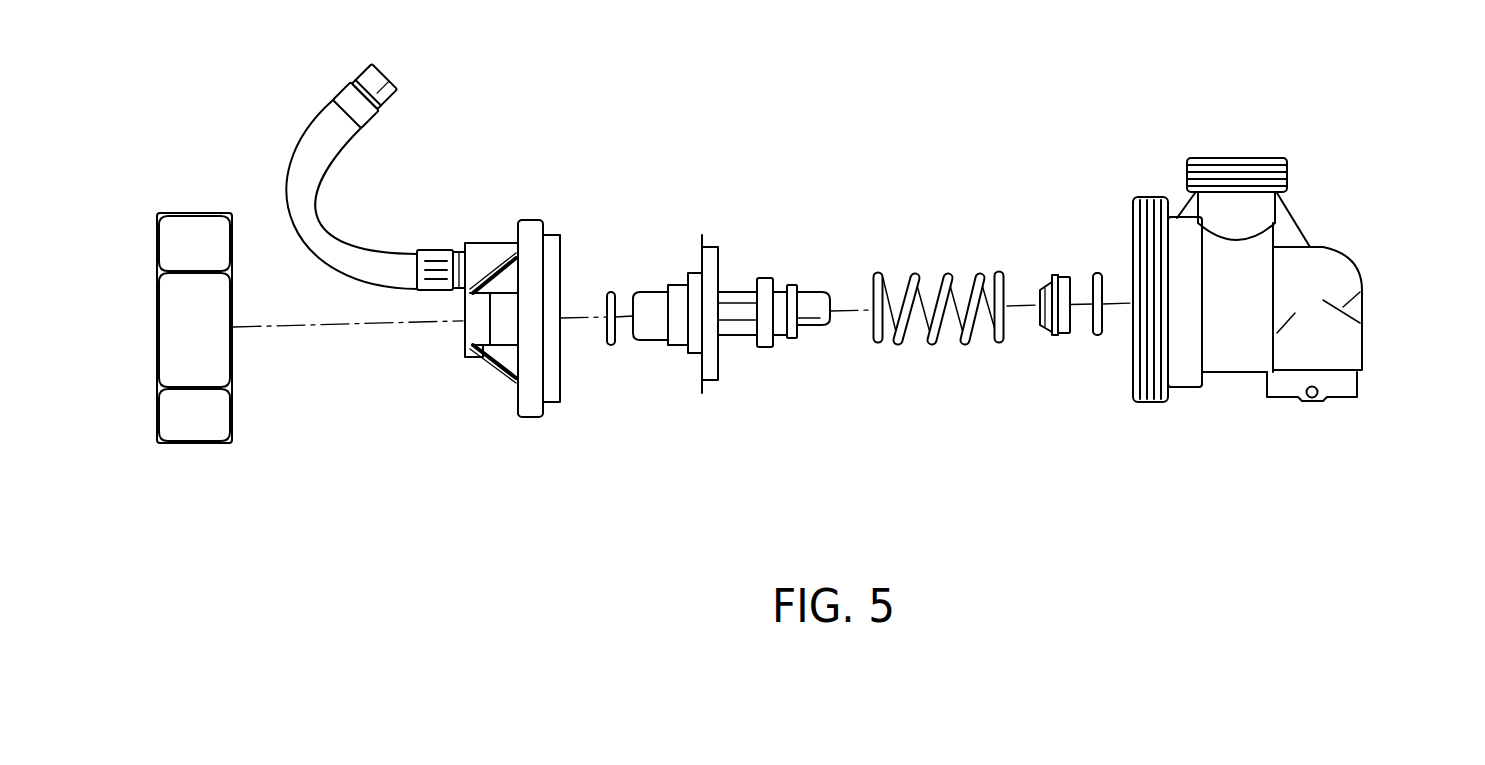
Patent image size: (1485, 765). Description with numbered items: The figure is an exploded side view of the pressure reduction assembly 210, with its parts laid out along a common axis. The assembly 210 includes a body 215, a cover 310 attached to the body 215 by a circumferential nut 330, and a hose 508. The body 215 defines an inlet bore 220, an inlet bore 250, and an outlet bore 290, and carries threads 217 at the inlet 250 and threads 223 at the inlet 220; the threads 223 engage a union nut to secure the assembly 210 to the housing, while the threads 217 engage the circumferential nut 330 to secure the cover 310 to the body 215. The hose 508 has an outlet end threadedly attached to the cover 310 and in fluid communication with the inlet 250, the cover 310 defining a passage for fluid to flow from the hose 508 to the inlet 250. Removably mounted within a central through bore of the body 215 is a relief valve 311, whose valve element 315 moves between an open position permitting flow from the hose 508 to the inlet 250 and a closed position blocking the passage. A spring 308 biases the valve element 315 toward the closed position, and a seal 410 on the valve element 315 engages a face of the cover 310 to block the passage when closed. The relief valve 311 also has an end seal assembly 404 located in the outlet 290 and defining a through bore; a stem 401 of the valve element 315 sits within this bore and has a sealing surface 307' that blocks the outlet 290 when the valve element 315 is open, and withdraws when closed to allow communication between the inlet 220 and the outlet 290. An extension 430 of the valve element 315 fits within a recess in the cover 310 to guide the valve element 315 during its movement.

The circumferential nut 330 is at (178, 232).
The hose 508 is at (300, 181).
The cover 310 is at (532, 225).
The relief valve 311 is at (1113, 217).
The extension 430 is at (652, 342).
The seal 410 is at (703, 380).
The valve element 315 is at (742, 362).
The sealing surface 307' is at (780, 280).
The stem 401 is at (817, 292).
The spring 308 is at (932, 344).
The end seal assembly 404 is at (1062, 277).
The pressure reduction assembly 210 is at (1258, 278).
The threads 223 is at (1187, 163).
The inlet bore 220 is at (1267, 157).
The inlet bore 250 is at (1133, 393).
The threads 217 is at (1167, 393).
The body 215 is at (1362, 290).
The outlet bore 290 is at (1357, 390).